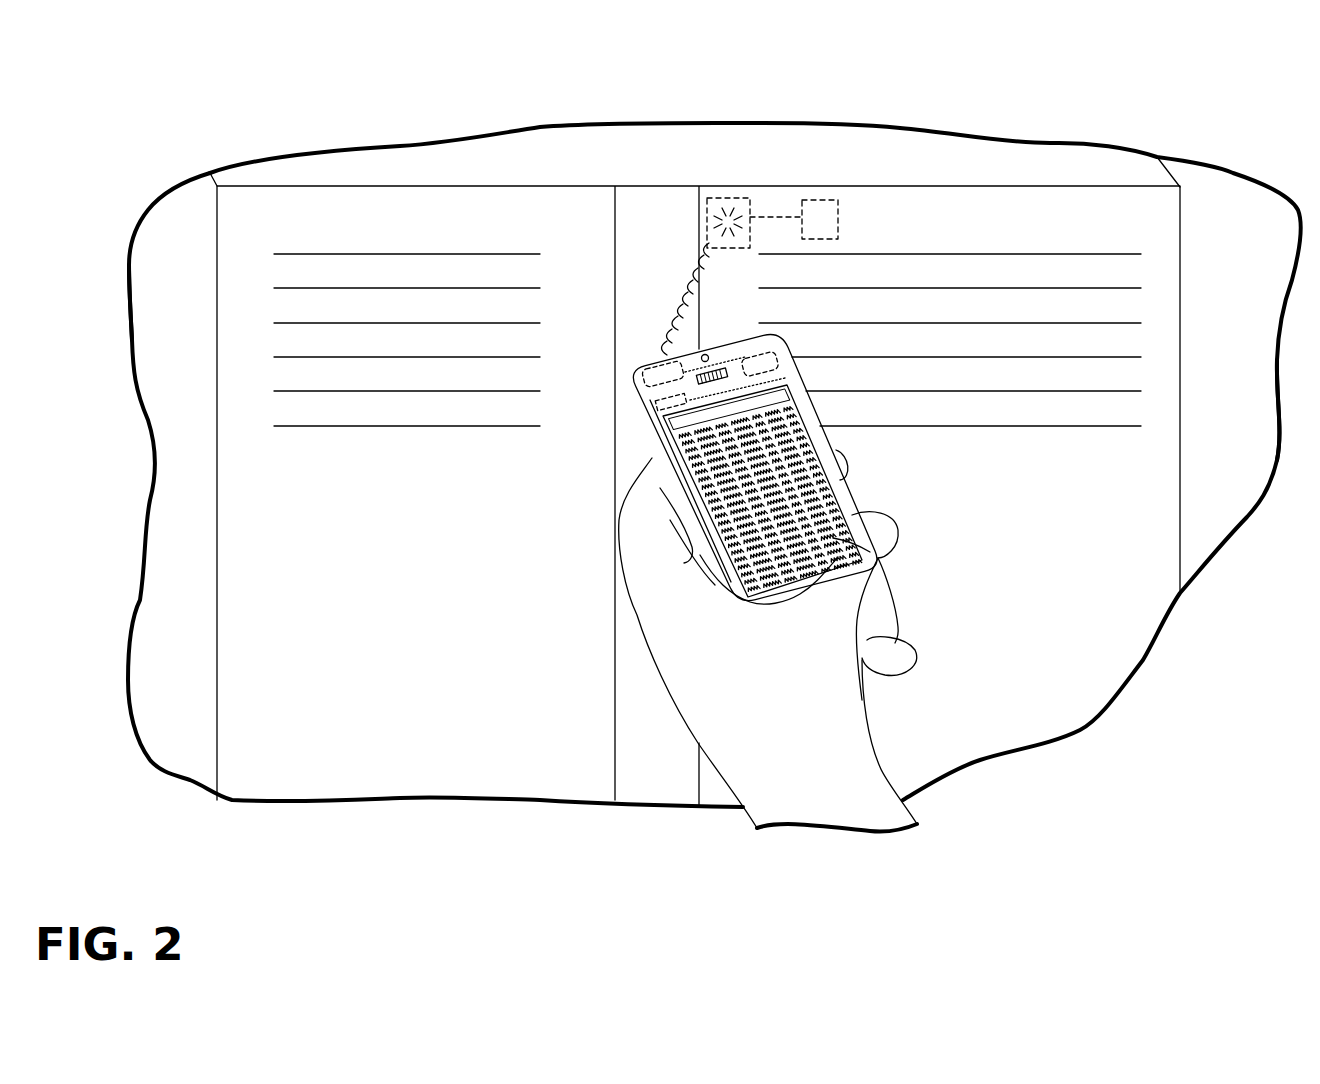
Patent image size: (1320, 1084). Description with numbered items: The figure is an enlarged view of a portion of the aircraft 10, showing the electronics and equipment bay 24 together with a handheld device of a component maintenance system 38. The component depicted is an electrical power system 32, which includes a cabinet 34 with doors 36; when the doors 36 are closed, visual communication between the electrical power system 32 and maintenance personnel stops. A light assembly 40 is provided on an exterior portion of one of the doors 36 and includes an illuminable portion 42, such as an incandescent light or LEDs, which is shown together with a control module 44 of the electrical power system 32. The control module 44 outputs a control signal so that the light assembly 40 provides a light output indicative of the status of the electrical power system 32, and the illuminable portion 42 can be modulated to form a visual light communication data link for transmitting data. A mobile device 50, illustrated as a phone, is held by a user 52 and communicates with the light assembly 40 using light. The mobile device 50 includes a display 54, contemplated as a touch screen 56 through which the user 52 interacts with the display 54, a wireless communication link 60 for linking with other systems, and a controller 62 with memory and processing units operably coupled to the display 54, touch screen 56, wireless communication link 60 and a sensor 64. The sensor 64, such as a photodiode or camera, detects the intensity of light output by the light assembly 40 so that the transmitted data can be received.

The aircraft 10 is at (190, 64).
The electronics and equipment bay 24 is at (250, 157).
The electrical power system 32 is at (368, 168).
The cabinet 34 is at (176, 246).
The doors 36 is at (1157, 223).
The component maintenance system 38 is at (632, 357).
The light assembly 40 is at (719, 190).
The illuminable portion 42 is at (718, 192).
The control module 44 is at (820, 197).
The mobile device 50 is at (803, 388).
The user 52 is at (779, 775).
The display 54 is at (805, 440).
The touch screen 56 is at (855, 503).
The wireless communication link 60 is at (636, 398).
The controller 62 is at (778, 350).
The sensor 64 is at (643, 372).